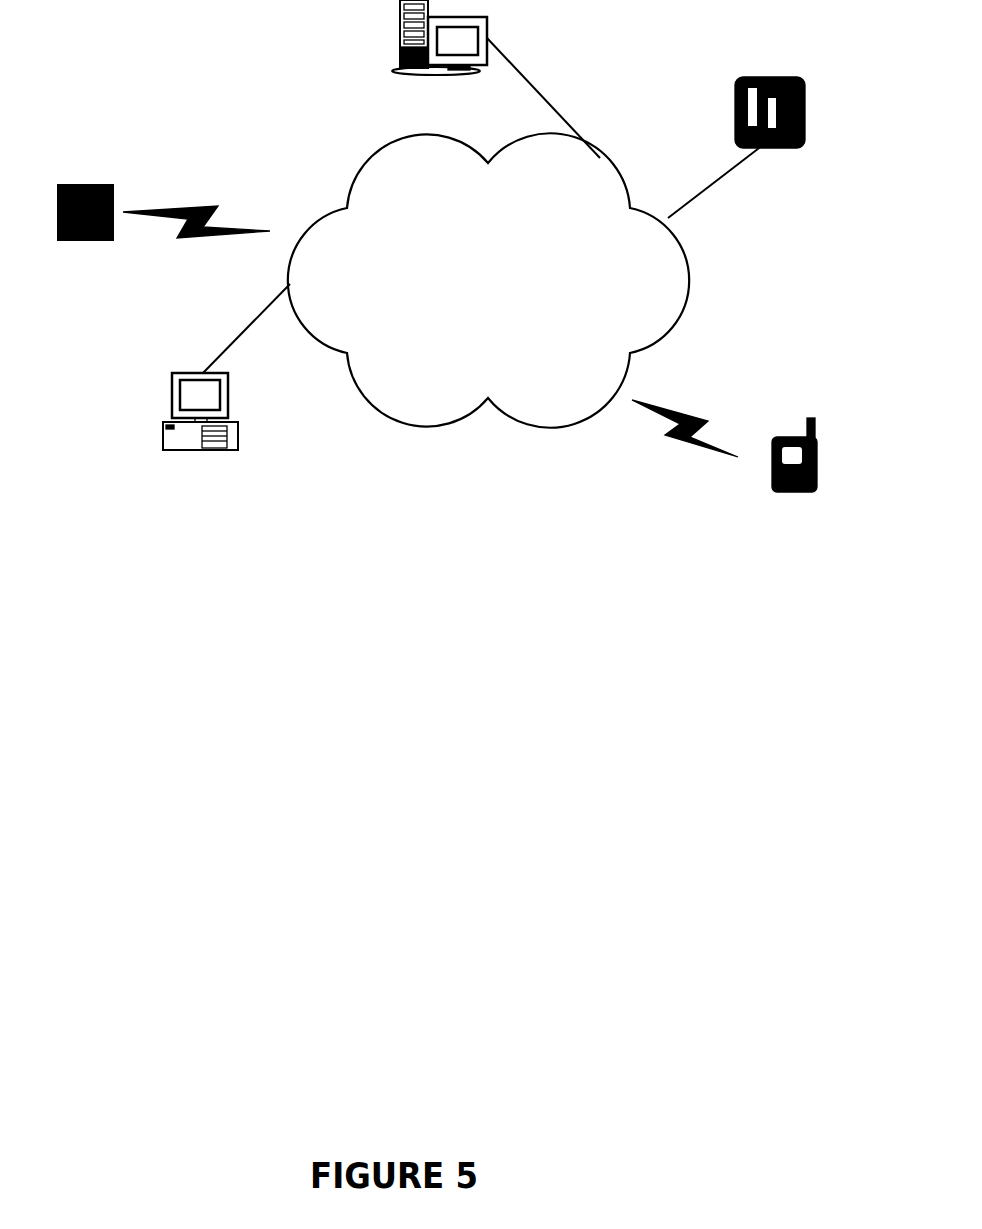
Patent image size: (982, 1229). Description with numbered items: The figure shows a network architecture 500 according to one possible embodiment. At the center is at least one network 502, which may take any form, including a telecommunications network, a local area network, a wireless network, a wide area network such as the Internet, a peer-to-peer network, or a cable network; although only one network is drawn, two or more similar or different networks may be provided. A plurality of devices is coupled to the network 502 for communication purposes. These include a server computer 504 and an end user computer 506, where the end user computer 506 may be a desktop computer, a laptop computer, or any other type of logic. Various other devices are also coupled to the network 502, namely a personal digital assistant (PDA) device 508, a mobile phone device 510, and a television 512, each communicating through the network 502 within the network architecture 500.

The network architecture 500 is at (400, 730).
The network 502 is at (547, 432).
The server computer 504 is at (398, 35).
The end user computer 506 is at (163, 430).
The personal digital assistant (PDA) device 508 is at (85, 185).
The mobile phone device 510 is at (770, 438).
The television 512 is at (750, 68).